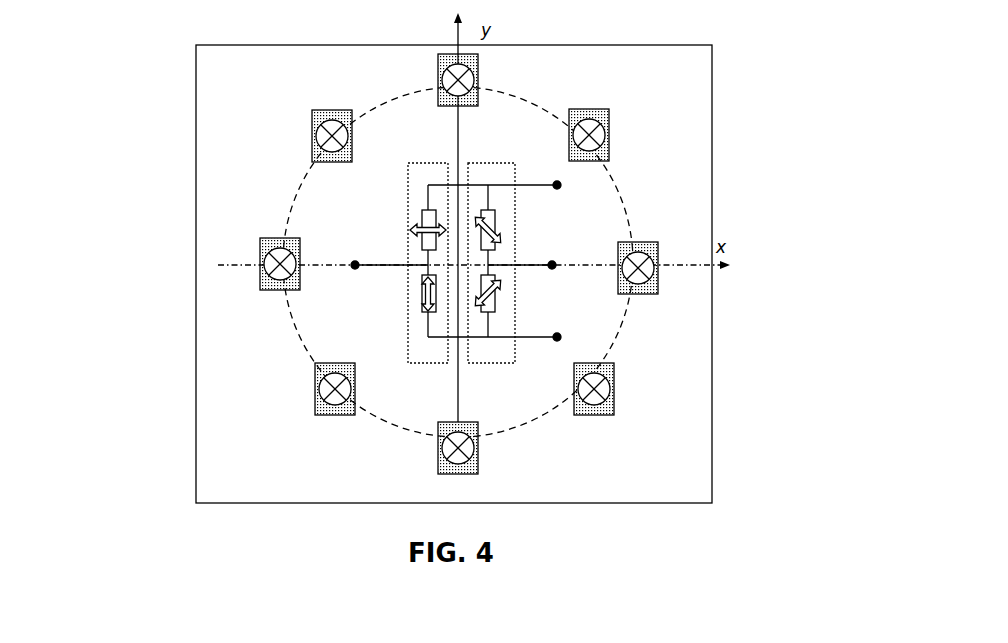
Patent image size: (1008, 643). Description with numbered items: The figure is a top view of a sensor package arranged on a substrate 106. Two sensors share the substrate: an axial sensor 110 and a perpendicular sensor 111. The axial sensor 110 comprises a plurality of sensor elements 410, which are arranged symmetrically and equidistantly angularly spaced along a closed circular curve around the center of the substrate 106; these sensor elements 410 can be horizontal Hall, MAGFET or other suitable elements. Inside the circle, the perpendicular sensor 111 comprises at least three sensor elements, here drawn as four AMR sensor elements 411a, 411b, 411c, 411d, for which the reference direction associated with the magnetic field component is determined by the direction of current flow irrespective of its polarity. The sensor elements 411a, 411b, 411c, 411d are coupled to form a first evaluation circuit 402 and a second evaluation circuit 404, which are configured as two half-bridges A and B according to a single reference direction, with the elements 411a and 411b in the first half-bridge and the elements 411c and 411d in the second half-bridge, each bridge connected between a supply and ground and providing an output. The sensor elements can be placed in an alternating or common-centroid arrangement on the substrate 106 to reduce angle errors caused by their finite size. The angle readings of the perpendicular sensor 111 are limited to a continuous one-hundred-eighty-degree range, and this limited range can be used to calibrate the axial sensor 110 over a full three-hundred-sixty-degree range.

The substrate 106 is at (712, 452).
The axial sensor 110 is at (536, 82).
The perpendicular sensor 111 is at (431, 146).
The first evaluation circuit 402 is at (426, 371).
The second evaluation circuit 404 is at (496, 371).
The sensor elements 410 is at (605, 128).
The sensor element 411a is at (422, 218).
The sensor element 411b is at (422, 304).
The sensor element 411c is at (497, 224).
The sensor element 411d is at (497, 304).